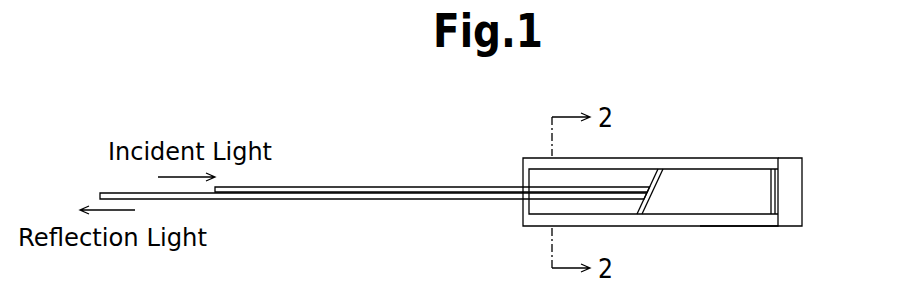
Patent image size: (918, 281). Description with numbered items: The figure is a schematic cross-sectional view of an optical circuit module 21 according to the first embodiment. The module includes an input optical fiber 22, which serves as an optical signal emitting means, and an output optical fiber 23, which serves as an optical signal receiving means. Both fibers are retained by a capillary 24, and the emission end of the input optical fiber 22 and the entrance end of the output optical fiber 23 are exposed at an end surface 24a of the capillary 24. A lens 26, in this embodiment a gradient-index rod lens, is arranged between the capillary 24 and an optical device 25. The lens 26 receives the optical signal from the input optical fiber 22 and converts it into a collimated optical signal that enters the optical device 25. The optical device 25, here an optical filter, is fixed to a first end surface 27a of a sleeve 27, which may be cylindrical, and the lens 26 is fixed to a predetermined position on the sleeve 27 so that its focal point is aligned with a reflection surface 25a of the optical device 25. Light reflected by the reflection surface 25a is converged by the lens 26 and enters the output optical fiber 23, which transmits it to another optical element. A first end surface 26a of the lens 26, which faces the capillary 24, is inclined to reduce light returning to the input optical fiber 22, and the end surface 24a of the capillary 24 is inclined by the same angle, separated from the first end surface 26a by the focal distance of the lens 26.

The optical circuit module 21 is at (671, 142).
The input optical fiber 22 is at (372, 186).
The output optical fiber 23 is at (305, 201).
The capillary 24 is at (637, 172).
The end surface of the capillary 24a is at (648, 216).
The optical device 25 is at (795, 158).
The reflection surface 25a is at (776, 191).
The lens 26 is at (718, 172).
The first end surface of the lens 26a is at (659, 193).
The sleeve 27 is at (749, 223).
The first end surface of the sleeve 27a is at (783, 221).